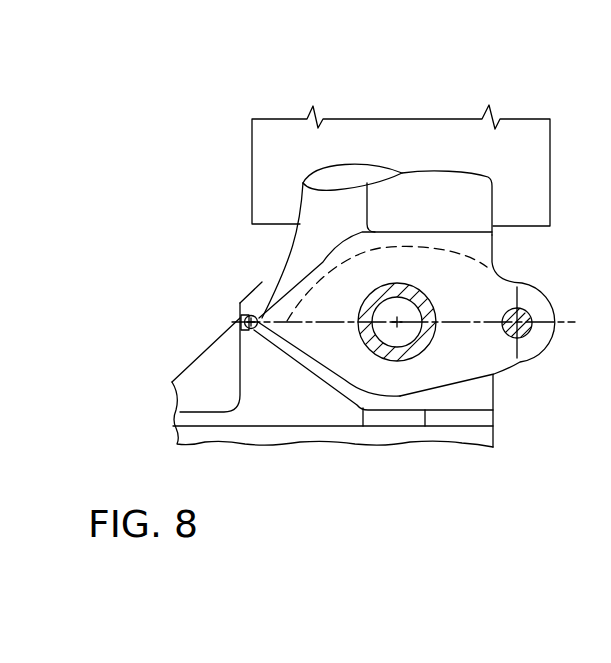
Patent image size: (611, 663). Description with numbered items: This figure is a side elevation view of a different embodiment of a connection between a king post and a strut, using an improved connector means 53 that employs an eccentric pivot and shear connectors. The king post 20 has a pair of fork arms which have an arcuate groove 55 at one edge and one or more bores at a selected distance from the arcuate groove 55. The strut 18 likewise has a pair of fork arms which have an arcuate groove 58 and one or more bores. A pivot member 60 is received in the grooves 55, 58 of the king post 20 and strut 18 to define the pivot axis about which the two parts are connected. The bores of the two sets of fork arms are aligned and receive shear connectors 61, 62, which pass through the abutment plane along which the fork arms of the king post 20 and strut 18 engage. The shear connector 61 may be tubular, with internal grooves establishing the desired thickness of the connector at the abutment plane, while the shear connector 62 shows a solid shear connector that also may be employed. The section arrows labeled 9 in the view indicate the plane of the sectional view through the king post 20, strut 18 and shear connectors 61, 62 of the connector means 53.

The section line 9- 9 is at (397, 143).
The strut 18 is at (470, 440).
The king post 20 is at (312, 210).
The connector means 53 is at (200, 283).
The arcuate groove 55 is at (264, 296).
The arcuate groove 58 is at (246, 329).
The pivot member 60 is at (241, 322).
The shear connector 61 is at (433, 286).
The shear connector 62 is at (510, 311).